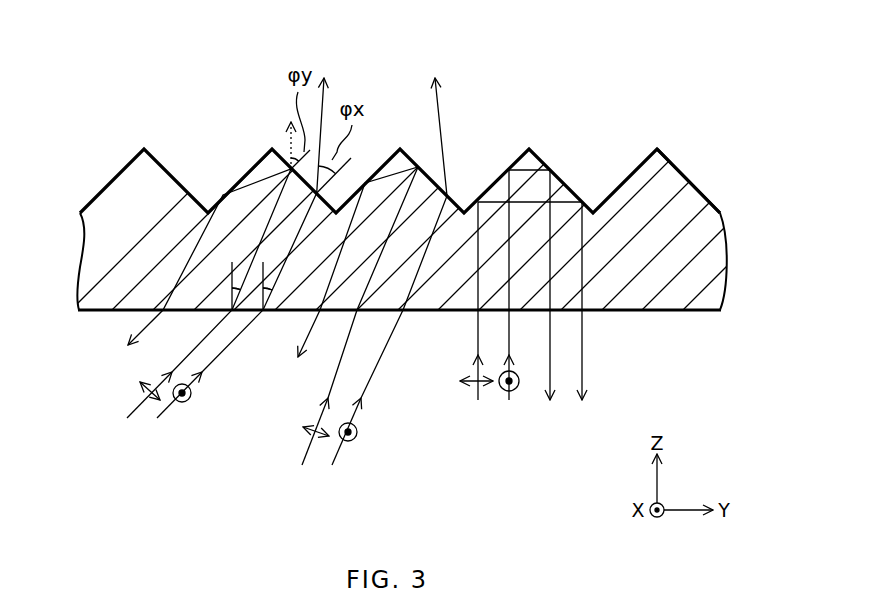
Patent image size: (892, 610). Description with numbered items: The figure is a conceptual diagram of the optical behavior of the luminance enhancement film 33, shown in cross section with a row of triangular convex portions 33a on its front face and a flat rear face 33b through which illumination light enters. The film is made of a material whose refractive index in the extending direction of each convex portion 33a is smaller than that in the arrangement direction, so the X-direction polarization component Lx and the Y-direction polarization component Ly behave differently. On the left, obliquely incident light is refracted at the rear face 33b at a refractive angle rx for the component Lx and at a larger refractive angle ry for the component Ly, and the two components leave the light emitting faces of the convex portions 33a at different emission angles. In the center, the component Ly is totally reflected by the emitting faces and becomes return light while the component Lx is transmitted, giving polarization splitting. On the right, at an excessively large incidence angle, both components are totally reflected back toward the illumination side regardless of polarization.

The luminance enhancement film 33 is at (665, 103).
The convex portion 33a is at (695, 192).
The flat bottom surface (light incident surface) 33b is at (634, 311).
The Y-direction polarization component Ly is at (126, 418).
The X-direction polarization component Lx is at (157, 418).
The refractive angle of the Y-direction polarization component ry is at (238, 289).
The refractive angle of the X-direction polarization component rx is at (270, 285).